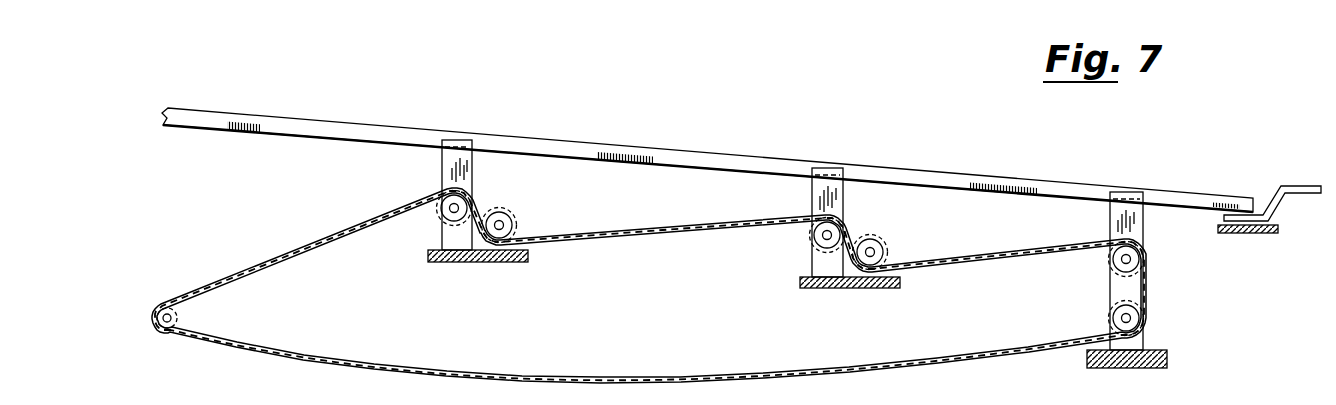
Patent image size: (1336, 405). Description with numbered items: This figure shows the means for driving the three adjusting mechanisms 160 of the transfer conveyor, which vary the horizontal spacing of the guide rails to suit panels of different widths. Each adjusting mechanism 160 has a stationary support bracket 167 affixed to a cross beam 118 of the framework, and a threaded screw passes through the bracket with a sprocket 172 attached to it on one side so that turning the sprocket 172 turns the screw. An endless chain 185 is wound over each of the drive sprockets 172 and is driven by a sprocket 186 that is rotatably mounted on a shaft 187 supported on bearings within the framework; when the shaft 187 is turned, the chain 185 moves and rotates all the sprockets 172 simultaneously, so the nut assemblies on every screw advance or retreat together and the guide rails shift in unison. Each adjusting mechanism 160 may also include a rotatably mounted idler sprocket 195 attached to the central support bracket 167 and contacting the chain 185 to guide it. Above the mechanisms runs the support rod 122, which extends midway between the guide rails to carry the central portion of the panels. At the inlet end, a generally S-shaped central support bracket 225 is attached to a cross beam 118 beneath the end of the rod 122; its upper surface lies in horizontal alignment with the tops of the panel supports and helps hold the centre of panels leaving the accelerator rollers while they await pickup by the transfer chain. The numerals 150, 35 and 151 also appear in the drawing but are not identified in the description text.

The support rod 122 is at (740, 133).
The adjusting mechanism 160 is at (758, 245).
The support bracket 167 is at (448, 168).
The sprocket 172 is at (437, 215).
The idler sprocket 195 is at (514, 218).
The endless chain 185 is at (283, 254).
The sprocket 186 is at (182, 314).
The shaft 187 is at (160, 318).
The cross beam 118 is at (480, 262).
The central support bracket 225 is at (1305, 188).
The frame 150 is at (113, 404).
The conveyor 35 is at (191, 404).
The chain lower run 151 is at (316, 398).